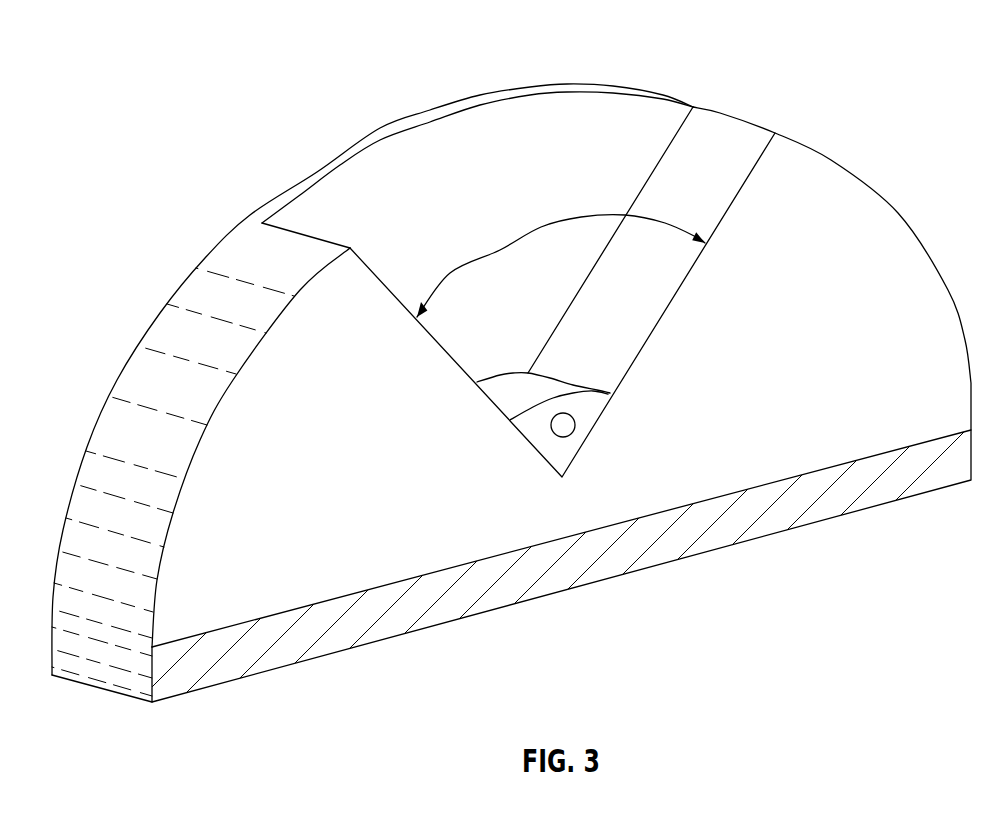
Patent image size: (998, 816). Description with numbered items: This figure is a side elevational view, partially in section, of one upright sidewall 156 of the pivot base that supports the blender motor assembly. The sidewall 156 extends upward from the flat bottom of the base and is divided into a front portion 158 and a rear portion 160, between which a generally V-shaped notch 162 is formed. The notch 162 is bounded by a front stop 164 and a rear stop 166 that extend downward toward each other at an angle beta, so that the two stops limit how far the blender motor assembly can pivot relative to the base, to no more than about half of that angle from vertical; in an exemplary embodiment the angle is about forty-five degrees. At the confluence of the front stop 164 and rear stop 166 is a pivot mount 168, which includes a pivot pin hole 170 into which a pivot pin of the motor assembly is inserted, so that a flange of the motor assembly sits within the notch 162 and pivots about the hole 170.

The sidewall 156 is at (160, 312).
The front portion 158 is at (158, 398).
The rear portion 160 is at (731, 115).
The V-shaped notch 162 is at (465, 172).
The front stop 164 is at (305, 233).
The rear stop 166 is at (675, 188).
The pivot mount 168 is at (538, 452).
The pivot pin hole 170 is at (574, 425).